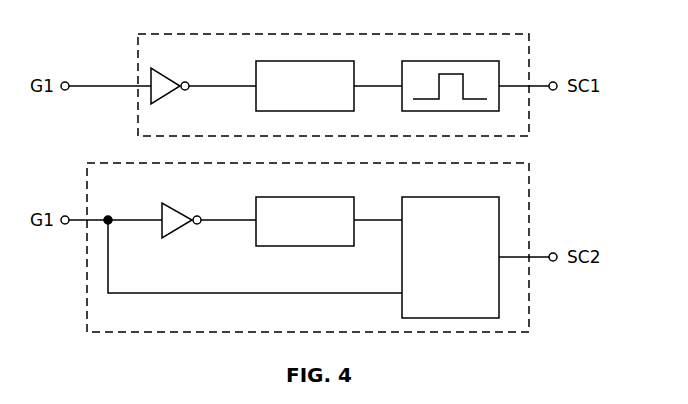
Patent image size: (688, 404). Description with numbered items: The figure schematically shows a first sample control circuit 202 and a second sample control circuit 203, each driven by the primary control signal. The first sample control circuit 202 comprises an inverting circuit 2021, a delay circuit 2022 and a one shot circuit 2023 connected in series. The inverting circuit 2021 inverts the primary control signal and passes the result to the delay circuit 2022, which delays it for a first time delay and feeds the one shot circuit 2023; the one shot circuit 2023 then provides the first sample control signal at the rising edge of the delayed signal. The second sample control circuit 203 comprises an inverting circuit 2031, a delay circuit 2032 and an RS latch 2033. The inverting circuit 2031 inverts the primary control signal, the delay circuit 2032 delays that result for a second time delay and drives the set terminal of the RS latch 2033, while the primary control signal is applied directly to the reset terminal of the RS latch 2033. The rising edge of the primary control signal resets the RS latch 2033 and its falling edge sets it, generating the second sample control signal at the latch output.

The first sample control circuit 202 is at (529, 118).
The inverting circuit 2021 is at (172, 81).
The delay circuit 2022 is at (305, 75).
The one shot circuit 2023 is at (450, 75).
The second sample control circuit 203 is at (529, 210).
The inverting circuit 2031 is at (183, 215).
The delay circuit 2032 is at (305, 211).
The RS latch 2033 is at (450, 247).